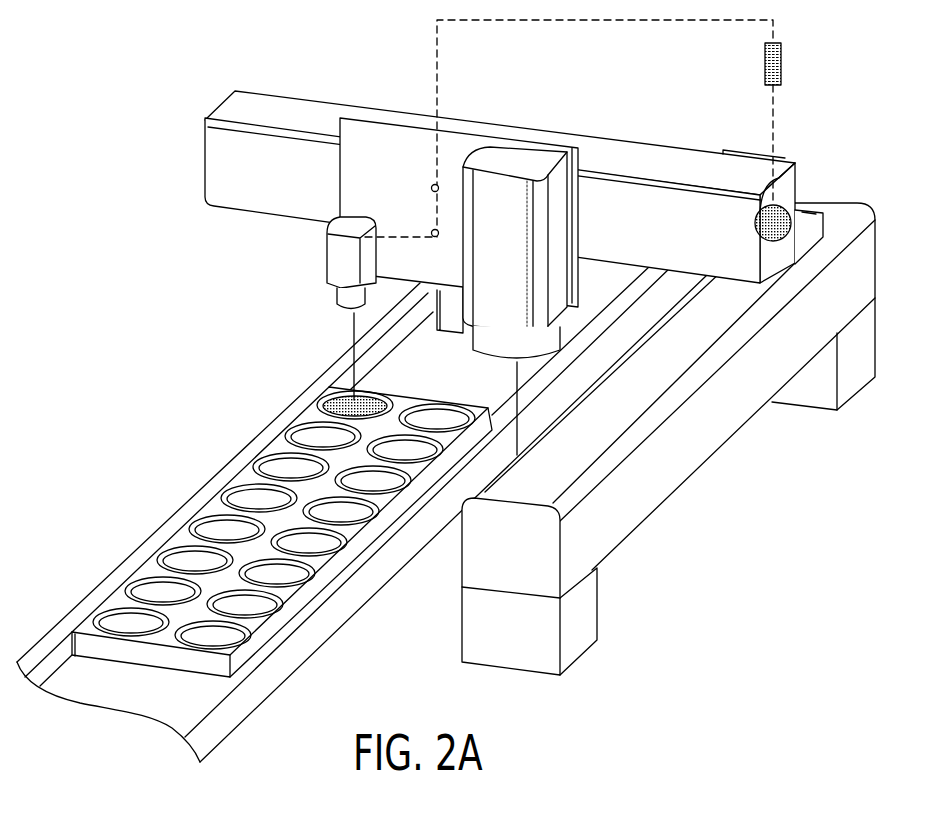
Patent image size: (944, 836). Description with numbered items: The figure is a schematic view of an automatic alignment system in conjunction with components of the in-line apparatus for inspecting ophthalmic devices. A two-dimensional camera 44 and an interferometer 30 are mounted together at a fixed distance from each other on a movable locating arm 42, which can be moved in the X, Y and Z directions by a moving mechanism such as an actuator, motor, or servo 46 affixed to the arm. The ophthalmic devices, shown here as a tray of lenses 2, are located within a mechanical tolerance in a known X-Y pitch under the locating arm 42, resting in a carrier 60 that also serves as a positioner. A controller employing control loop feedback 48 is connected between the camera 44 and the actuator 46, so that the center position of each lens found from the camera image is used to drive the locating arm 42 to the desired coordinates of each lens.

The microplate tray 2 is at (235, 502).
The interferometer 30 is at (518, 155).
The locating arm 42 is at (217, 123).
The two-dimensional camera 44 is at (340, 258).
The actuator, motor, or servo 46 is at (797, 208).
The controller employing control loop feedback 48 is at (782, 70).
The carrier 60 is at (313, 632).